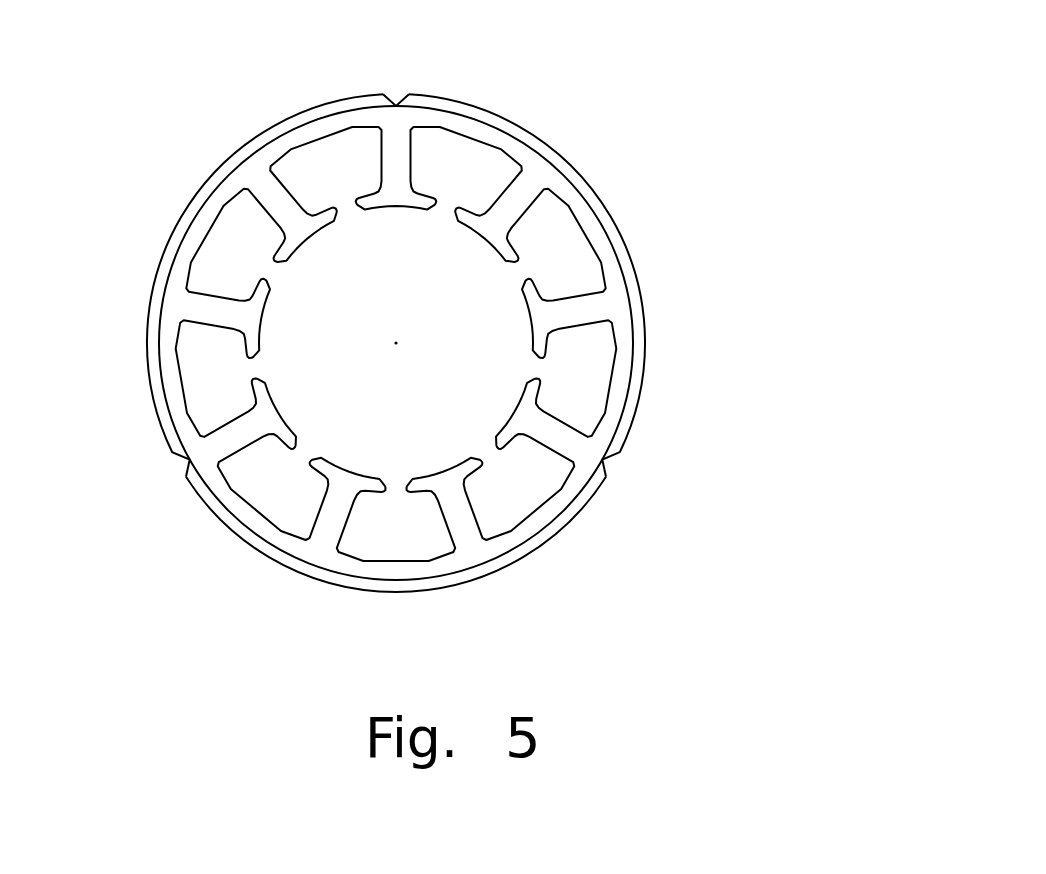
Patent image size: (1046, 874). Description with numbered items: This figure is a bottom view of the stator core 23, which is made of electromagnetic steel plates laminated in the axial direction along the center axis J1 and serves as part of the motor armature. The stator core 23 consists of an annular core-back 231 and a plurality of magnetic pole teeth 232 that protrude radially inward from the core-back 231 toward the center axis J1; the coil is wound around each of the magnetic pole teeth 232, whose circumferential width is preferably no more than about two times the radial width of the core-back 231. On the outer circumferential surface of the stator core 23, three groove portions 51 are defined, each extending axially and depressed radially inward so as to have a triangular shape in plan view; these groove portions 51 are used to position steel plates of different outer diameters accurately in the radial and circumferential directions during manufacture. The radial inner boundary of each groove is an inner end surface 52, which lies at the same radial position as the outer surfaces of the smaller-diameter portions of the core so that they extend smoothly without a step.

The stator core 23 is at (82, 42).
The groove portion 51 is at (397, 103).
The inner end surface 52 is at (603, 462).
The core-back 231 is at (250, 517).
The magnetic pole tooth 232 is at (217, 307).
The center axis J1 is at (396, 343).